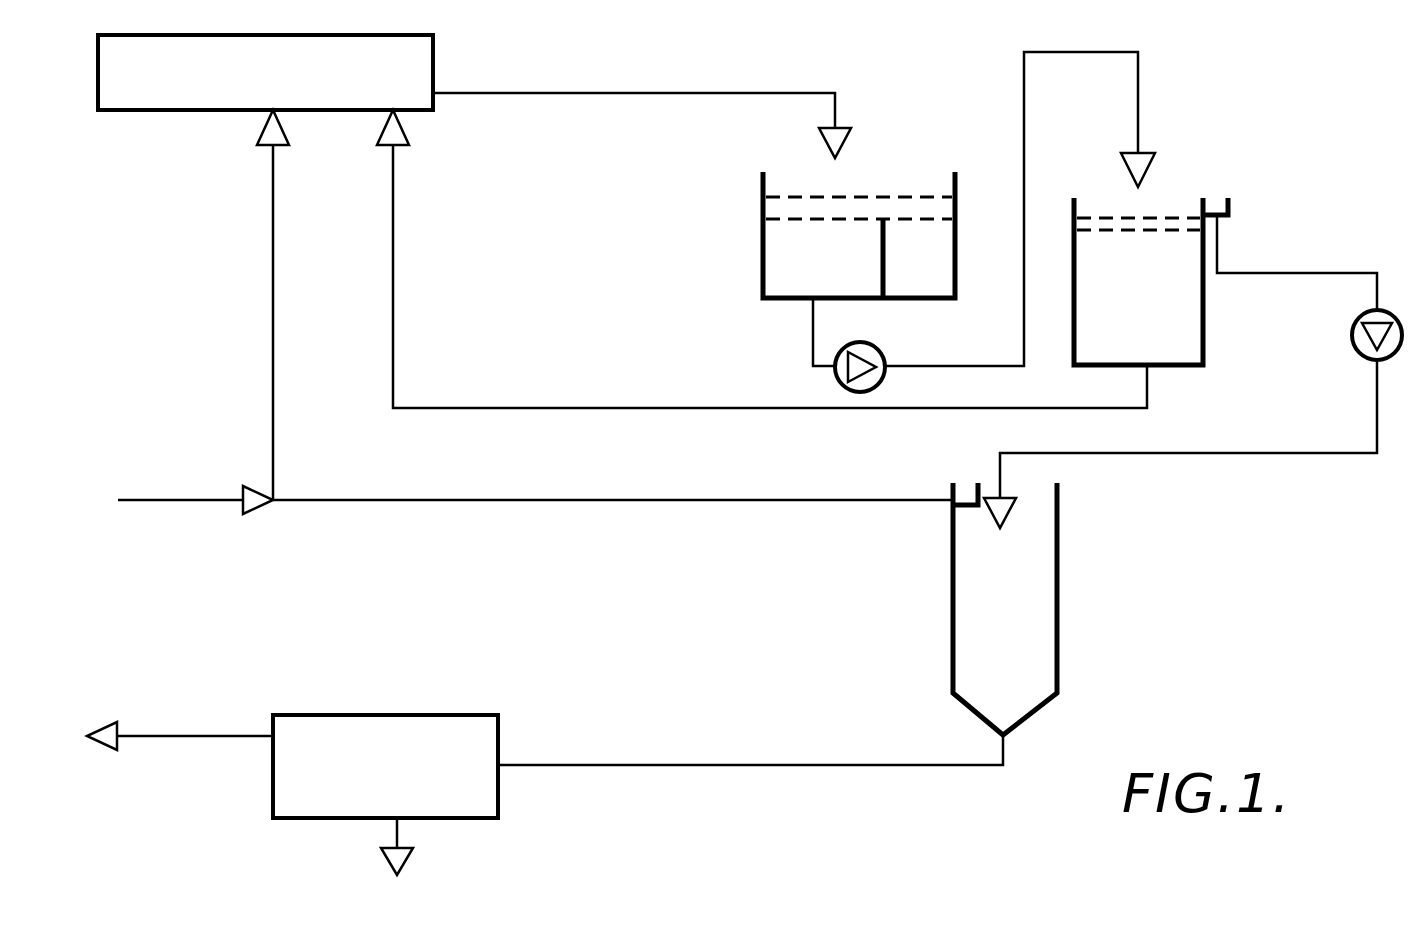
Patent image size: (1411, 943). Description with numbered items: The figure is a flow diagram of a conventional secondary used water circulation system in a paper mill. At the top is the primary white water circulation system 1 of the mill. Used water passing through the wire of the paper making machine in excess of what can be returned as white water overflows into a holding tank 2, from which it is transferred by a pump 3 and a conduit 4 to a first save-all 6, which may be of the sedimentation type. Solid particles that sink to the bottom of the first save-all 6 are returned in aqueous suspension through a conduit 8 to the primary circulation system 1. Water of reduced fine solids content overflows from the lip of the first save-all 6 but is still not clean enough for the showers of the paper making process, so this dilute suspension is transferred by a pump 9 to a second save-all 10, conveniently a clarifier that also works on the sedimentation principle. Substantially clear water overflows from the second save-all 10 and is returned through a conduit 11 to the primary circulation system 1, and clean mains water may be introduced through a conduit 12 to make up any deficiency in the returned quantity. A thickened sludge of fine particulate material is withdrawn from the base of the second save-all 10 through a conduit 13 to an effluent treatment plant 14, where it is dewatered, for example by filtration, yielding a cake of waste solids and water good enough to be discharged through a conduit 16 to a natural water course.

The primary white water circulation system 1 is at (273, 88).
The holding tank 2 is at (760, 252).
The pump 3 is at (884, 346).
The conduit 4 is at (1025, 154).
The first save-all 6 is at (1206, 318).
The conduit 8 is at (620, 408).
The pump 9 is at (1352, 340).
The second save-all 10 is at (1060, 650).
The conduit 11 is at (645, 498).
The conduit 12 is at (195, 498).
The conduit 13 is at (640, 765).
The effluent treatment plant 14 is at (402, 782).
The conduit 16 is at (210, 735).